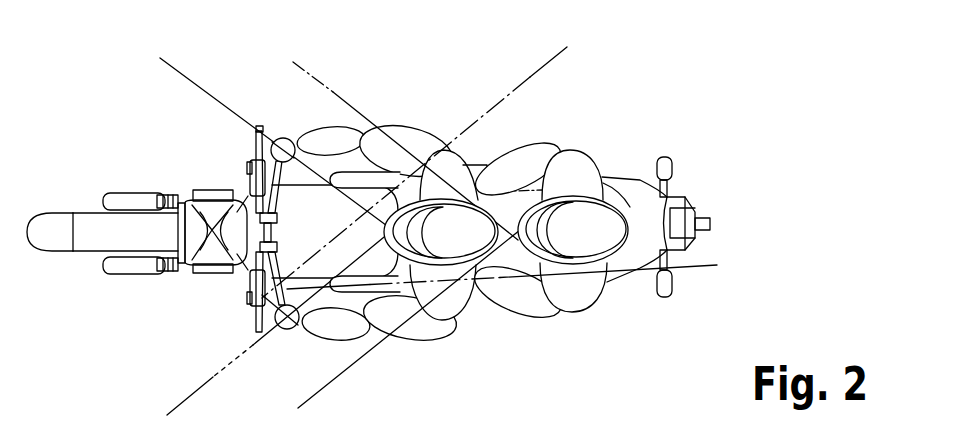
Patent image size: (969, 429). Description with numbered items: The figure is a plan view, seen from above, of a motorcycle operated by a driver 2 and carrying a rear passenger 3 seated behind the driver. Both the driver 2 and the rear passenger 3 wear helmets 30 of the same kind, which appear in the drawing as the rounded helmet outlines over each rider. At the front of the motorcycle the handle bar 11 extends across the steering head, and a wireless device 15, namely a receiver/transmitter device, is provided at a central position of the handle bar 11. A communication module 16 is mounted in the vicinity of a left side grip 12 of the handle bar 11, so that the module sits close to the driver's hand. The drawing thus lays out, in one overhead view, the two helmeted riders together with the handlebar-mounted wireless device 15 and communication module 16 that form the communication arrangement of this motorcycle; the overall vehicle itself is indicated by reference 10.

The motorcycle 10 is at (147, 188).
The handle bar 11 is at (250, 282).
The left side grip 12 is at (290, 337).
The wireless device 15 is at (248, 192).
The communication module 16 is at (252, 303).
The driver 2 is at (459, 297).
The rear passenger 3 is at (597, 158).
The helmet 30 is at (451, 217).